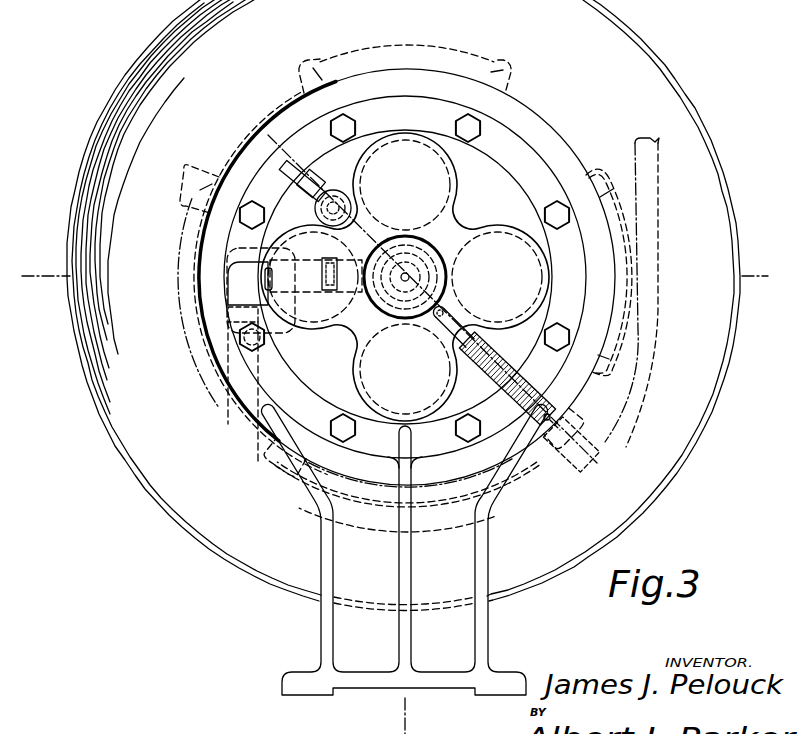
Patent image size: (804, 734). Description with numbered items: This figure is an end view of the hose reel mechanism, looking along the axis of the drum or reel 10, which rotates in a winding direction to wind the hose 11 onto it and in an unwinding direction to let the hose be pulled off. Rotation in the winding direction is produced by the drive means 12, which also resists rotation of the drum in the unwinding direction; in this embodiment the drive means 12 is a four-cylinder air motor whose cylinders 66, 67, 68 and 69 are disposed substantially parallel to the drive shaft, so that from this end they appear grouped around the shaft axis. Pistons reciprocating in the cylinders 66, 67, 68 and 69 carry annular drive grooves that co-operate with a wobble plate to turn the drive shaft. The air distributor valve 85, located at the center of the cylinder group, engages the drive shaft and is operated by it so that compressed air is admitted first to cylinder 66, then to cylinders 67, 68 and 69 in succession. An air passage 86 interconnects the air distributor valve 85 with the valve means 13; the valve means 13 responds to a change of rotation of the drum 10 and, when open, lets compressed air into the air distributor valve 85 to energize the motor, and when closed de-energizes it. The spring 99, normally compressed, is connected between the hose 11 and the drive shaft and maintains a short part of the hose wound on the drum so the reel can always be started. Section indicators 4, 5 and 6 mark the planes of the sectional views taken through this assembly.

The section line 4- 4 is at (589, 476).
The section line 5- 5 is at (404, 720).
The section line 6- 6 is at (766, 290).
The drum or reel 10 is at (715, 398).
The hose 11 is at (661, 233).
The drive means 12 is at (492, 200).
The valve means 13 is at (334, 190).
The cylinder 66 is at (405, 185).
The cylinder 67 is at (497, 277).
The cylinder 68 is at (405, 369).
The cylinder 69 is at (294, 282).
The air distributor valve 85 is at (422, 257).
The air passage 86 is at (405, 277).
The spring 99 is at (496, 352).